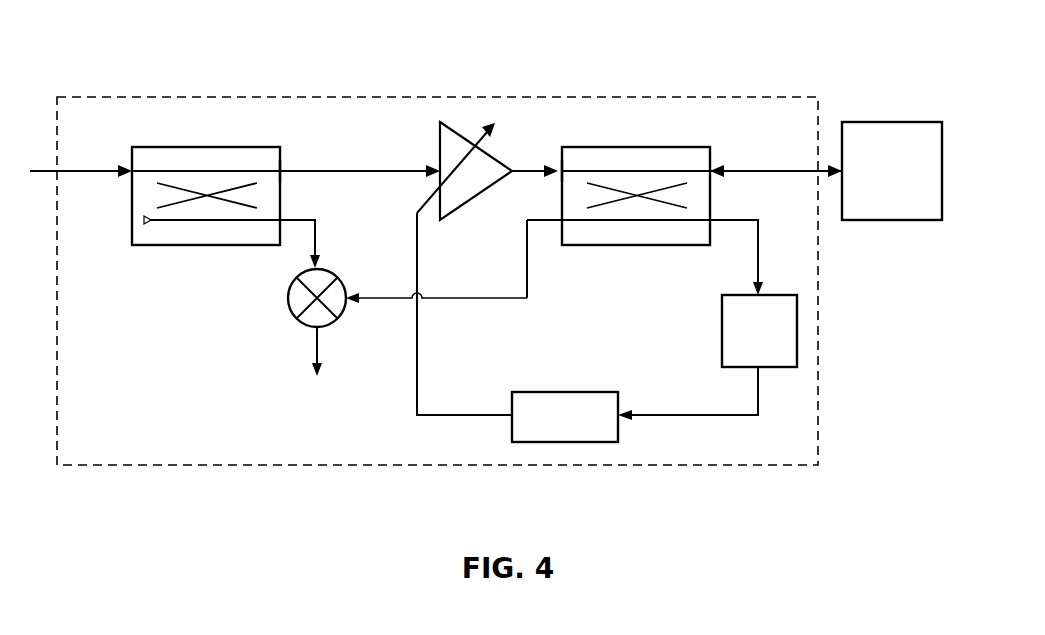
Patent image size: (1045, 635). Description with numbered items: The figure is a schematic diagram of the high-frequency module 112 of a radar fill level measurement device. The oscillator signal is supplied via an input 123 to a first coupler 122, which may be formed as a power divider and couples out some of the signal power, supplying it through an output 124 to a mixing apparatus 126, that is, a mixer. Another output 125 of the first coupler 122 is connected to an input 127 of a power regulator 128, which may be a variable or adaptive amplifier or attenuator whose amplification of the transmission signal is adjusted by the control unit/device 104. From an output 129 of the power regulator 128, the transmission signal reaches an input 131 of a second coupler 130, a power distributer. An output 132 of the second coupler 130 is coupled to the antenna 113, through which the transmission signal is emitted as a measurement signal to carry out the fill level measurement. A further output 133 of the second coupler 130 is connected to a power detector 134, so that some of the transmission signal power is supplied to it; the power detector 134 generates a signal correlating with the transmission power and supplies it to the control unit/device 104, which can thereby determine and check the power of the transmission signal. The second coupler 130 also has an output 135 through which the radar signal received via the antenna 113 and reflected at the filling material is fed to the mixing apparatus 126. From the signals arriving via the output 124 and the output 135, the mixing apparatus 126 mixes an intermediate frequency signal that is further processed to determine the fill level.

The control unit/device 104 is at (595, 443).
The high-frequency module 112 is at (590, 90).
The antenna 113 is at (892, 122).
The first coupler 122 is at (215, 147).
The input 123 is at (130, 168).
The output 124 is at (283, 220).
The output 125 is at (283, 168).
The mixing apparatus 126 is at (290, 312).
The input 127 is at (437, 168).
The power regulator 128 is at (450, 128).
The output 129 is at (514, 168).
The second coupler 130 is at (638, 147).
The input 131 is at (560, 168).
The output 132 is at (713, 168).
The output 133 is at (713, 220).
The power detector 134 is at (799, 328).
The output 135 is at (554, 223).